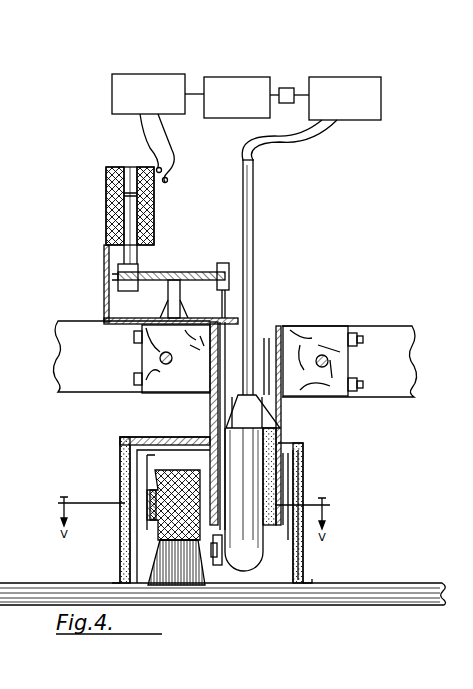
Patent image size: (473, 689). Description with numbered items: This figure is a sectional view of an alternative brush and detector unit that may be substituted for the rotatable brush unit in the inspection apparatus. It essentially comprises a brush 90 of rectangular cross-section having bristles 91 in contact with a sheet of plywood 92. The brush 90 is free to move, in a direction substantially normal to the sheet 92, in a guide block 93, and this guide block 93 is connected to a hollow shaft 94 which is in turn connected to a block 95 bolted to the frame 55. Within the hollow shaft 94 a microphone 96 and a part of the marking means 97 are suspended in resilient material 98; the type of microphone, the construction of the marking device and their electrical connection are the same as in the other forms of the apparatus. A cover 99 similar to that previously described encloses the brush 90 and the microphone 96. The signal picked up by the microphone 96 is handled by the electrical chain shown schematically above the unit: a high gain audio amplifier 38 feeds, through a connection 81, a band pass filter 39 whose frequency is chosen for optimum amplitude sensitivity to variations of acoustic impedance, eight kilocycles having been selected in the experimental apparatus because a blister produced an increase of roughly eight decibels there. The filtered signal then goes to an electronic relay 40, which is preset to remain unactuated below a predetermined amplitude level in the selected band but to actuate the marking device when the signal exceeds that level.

The high gain audio amplifier 38 is at (350, 77).
The filter 39 is at (234, 77).
The electronic relay 40 is at (150, 74).
The connector 81 is at (288, 88).
The frame 55 is at (413, 374).
The brush 90 is at (155, 475).
The bristles 91 is at (180, 582).
The sheet of plywood 92 is at (376, 590).
The guide block 93 is at (148, 510).
The hollow shaft 94 is at (210, 412).
The block 95 is at (325, 342).
The microphone 96 is at (255, 240).
The marking means 97 is at (165, 185).
The resilient material 98 is at (272, 440).
The cover 99 is at (305, 553).